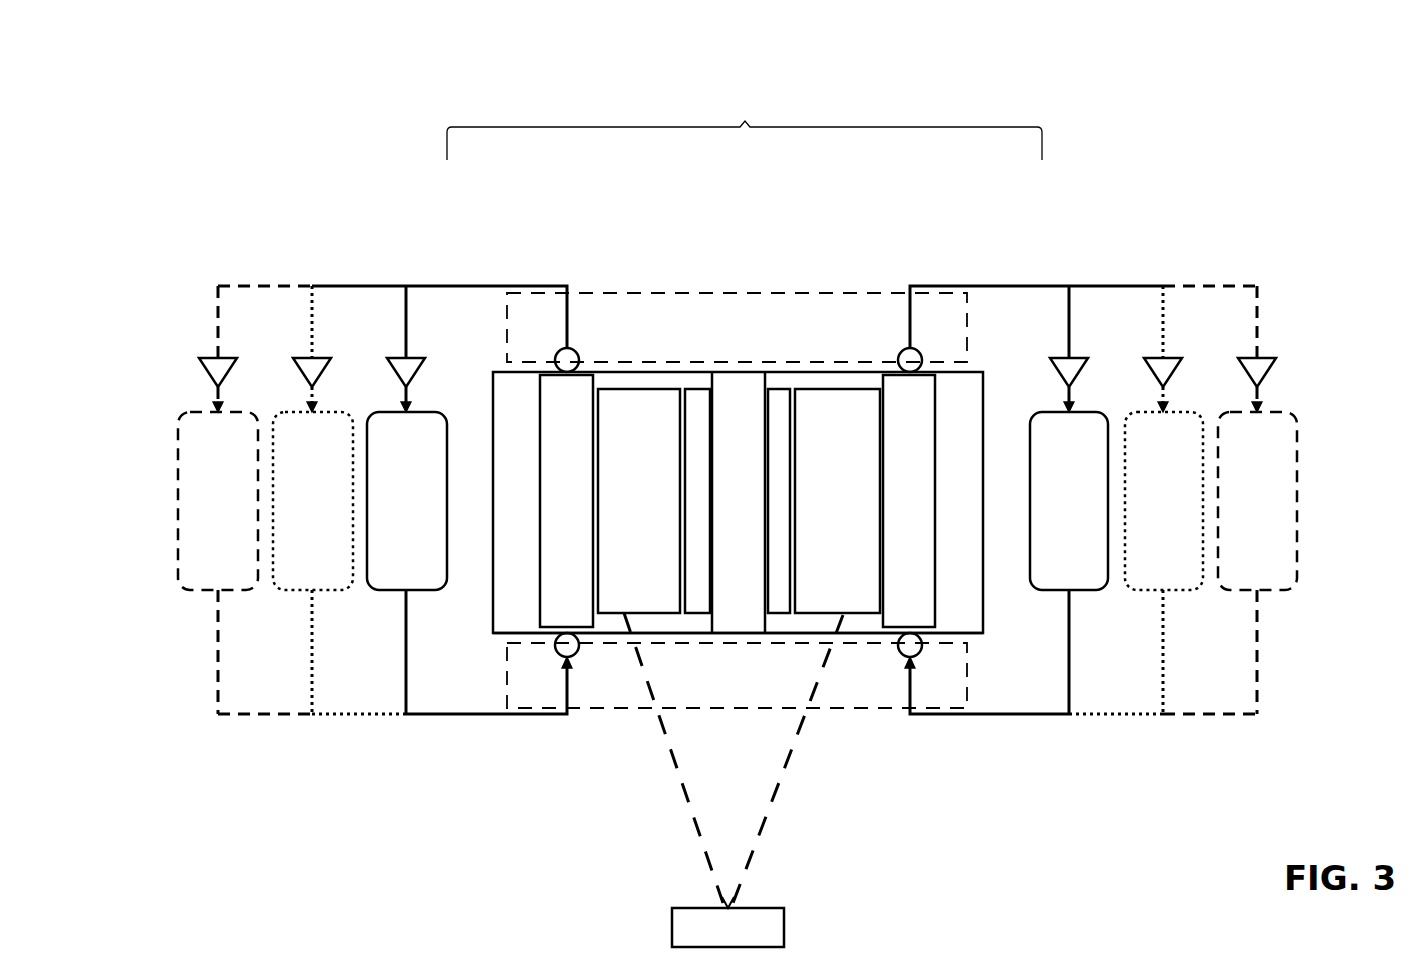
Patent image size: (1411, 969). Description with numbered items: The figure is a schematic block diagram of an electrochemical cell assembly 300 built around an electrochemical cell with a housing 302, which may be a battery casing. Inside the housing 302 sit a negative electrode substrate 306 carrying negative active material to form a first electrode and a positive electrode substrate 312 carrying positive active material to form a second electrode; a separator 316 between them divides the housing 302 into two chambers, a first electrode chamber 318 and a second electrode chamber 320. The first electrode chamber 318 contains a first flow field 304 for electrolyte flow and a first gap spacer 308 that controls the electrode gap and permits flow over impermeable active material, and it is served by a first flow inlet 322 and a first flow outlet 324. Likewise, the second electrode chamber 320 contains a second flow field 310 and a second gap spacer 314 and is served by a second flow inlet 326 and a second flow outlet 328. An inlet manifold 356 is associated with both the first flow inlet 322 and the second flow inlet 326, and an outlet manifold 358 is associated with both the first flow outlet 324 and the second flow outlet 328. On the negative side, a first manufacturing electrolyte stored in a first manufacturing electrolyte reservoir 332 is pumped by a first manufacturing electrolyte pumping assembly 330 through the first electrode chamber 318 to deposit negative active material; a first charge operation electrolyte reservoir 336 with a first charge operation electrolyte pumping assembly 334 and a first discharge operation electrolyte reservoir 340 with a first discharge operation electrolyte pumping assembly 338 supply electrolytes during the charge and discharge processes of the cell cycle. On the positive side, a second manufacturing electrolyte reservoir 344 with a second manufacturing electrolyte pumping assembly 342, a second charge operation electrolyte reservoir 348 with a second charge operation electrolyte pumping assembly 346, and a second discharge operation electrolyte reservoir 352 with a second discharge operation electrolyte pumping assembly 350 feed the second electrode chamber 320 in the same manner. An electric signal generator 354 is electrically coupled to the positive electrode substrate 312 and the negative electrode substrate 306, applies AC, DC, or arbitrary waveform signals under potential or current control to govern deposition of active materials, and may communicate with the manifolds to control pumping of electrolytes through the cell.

The electrochemical cell assembly 300 is at (397, 78).
The housing 302 is at (745, 121).
The first flow field 304 is at (580, 393).
The negative electrode substrate 306 is at (627, 410).
The first gap spacer 308 is at (693, 397).
The second flow field 310 is at (893, 597).
The positive electrode substrate 312 is at (840, 563).
The second gap spacer 314 is at (783, 603).
The separator 316 is at (727, 577).
The first electrode chamber 318 is at (652, 637).
The second electrode chamber 320 is at (785, 368).
The first flow inlet 322 is at (575, 660).
The first flow outlet 324 is at (578, 345).
The second flow inlet 326 is at (908, 660).
The second flow outlet 328 is at (905, 347).
The first manufacturing electrolyte pumping assembly 330 is at (398, 357).
The first manufacturing electrolyte reservoir 332 is at (407, 563).
The first charge operation electrolyte pumping assembly 334 is at (310, 357).
The first charge operation electrolyte reservoir 336 is at (313, 563).
The first discharge operation electrolyte pumping assembly 338 is at (210, 357).
The first discharge operation electrolyte reservoir 340 is at (218, 563).
The second manufacturing electrolyte pumping assembly 342 is at (1078, 357).
The second manufacturing electrolyte reservoir 344 is at (1069, 563).
The second charge operation electrolyte pumping assembly 346 is at (1175, 357).
The second charge operation electrolyte reservoir 348 is at (1164, 563).
The second discharge operation electrolyte pumping assembly 350 is at (1265, 357).
The second discharge operation electrolyte reservoir 352 is at (1257, 563).
The electric signal generator 354 is at (733, 780).
The inlet manifold 356 is at (523, 693).
The outlet manifold 358 is at (940, 333).